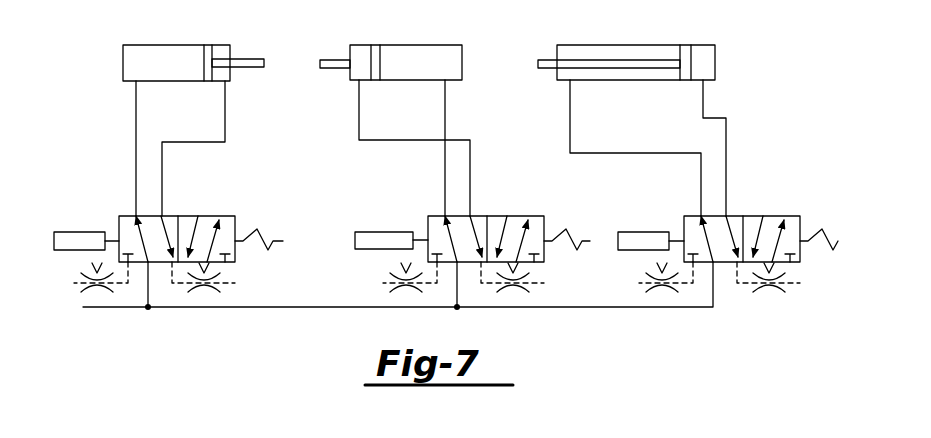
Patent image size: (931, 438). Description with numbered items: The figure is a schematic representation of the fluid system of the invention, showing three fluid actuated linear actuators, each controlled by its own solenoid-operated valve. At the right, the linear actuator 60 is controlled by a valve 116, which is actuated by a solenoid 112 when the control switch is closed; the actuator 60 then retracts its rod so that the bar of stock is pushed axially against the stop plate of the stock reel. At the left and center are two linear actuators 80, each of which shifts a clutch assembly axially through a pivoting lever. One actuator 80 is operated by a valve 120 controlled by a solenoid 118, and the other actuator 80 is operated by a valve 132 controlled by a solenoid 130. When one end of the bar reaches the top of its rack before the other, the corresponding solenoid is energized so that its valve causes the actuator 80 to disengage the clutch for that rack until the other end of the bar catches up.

The fluid actuated linear actuator 60 is at (625, 50).
The fluid actuated linear actuator 80 is at (212, 52).
The solenoid 112 is at (663, 207).
The valve 116 is at (773, 217).
The solenoid 118 is at (103, 200).
The valve 120 is at (220, 222).
The solenoid 130 is at (407, 202).
The valve 132 is at (515, 222).